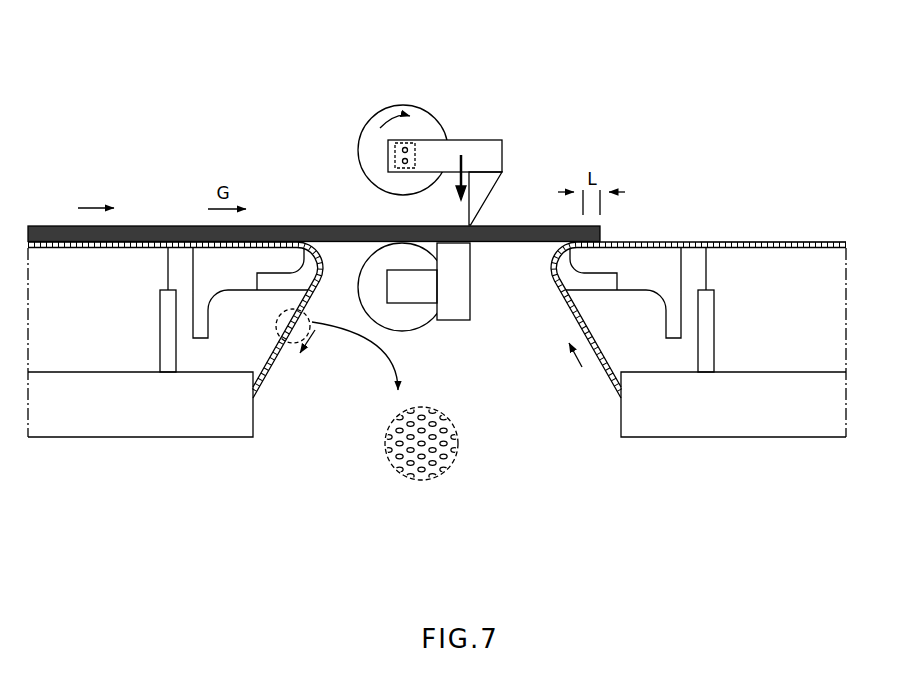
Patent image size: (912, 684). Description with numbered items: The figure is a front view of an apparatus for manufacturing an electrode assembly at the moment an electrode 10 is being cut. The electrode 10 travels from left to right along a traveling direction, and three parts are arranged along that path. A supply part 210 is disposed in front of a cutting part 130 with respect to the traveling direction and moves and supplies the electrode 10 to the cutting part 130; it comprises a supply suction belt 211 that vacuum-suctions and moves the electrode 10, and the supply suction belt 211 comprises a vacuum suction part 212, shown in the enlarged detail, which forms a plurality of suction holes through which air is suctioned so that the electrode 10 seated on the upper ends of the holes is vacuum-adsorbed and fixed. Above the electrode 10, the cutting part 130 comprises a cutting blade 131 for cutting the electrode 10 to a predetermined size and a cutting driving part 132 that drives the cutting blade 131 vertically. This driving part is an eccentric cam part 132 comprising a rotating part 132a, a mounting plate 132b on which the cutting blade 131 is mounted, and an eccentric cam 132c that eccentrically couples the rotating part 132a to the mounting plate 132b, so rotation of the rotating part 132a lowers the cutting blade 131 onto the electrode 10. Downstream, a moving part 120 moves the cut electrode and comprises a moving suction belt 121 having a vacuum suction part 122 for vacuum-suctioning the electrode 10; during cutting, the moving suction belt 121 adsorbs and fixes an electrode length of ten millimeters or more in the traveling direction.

The electrode 10 is at (290, 226).
The moving part 120 is at (828, 213).
The moving suction belt 121 is at (629, 233).
The vacuum suction part 122 is at (784, 241).
The cutting part 130 is at (430, 123).
The cutting blade 131 is at (490, 193).
The cutting driving part 132 is at (416, 117).
The rotating part 132a is at (385, 108).
The mounting plate 132b is at (482, 152).
The eccentric cam 132c is at (393, 155).
The supply part 210 is at (270, 406).
The supply suction belt 211 is at (278, 365).
The vacuum suction part 212 is at (443, 431).